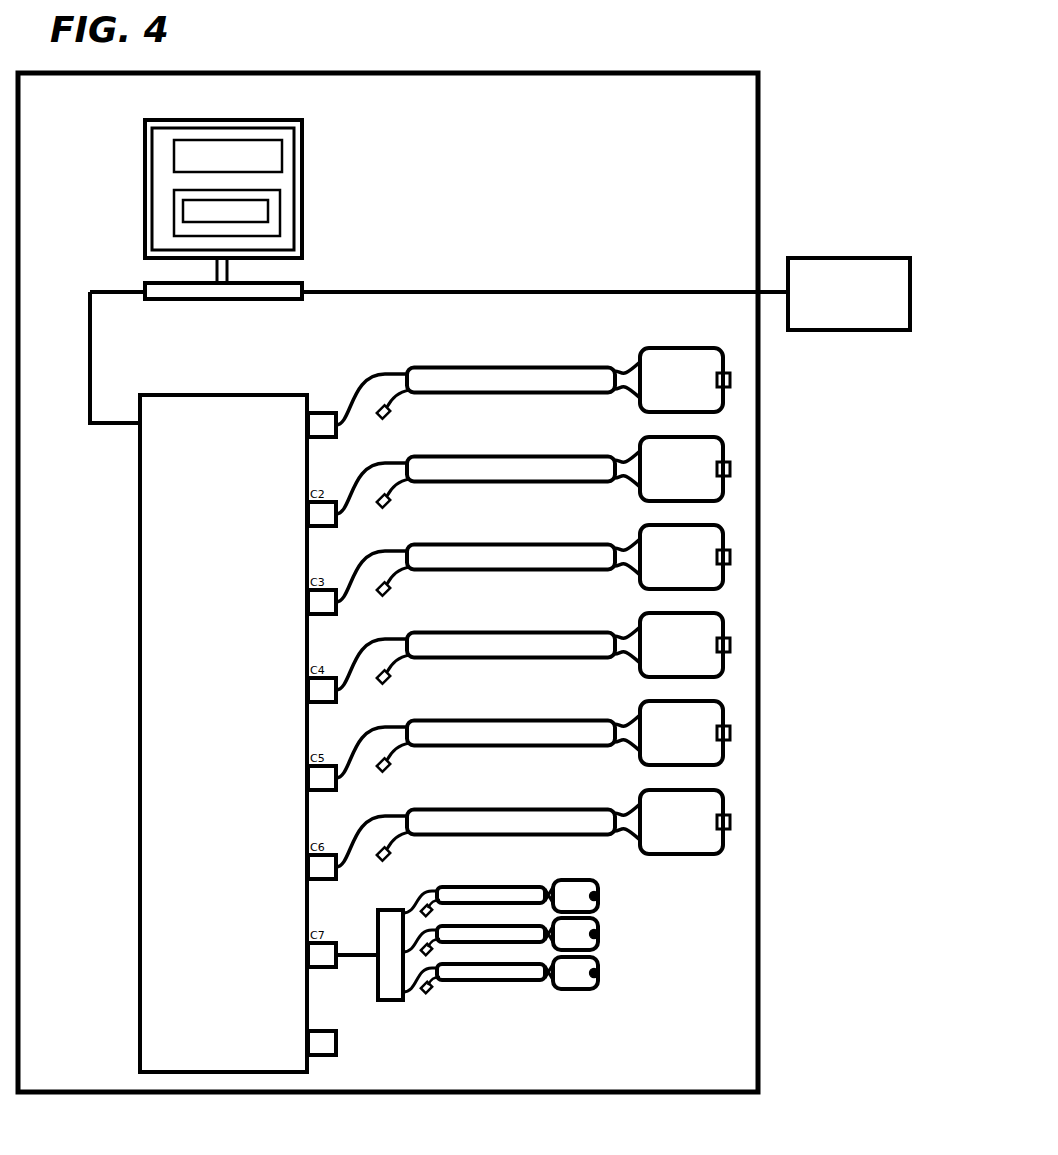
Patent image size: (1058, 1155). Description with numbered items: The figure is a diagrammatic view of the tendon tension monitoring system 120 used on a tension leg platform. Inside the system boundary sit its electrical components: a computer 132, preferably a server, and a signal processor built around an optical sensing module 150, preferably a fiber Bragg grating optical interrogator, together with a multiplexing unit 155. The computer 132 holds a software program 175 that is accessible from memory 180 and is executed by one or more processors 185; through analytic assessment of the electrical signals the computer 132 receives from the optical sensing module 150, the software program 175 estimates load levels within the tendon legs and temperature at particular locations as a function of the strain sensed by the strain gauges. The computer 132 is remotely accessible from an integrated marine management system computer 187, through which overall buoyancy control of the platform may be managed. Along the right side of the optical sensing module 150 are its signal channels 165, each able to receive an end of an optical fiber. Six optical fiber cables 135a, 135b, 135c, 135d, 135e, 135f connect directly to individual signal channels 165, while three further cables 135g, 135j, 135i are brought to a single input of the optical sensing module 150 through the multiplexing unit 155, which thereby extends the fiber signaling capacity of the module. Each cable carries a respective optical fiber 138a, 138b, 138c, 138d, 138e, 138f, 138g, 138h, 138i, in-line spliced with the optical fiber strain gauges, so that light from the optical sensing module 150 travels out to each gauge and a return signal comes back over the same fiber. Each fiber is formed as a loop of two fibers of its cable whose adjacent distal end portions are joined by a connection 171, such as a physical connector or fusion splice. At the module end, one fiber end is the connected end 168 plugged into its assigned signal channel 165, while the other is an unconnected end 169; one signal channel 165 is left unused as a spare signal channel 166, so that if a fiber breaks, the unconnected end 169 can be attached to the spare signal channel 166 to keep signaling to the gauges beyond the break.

The tendon tension monitoring system 120 is at (412, 72).
The computer 132 is at (145, 172).
The processors 185 is at (282, 156).
The software program 175 is at (270, 208).
The memory 180 is at (283, 210).
The integrated marine management system computer 187 is at (837, 270).
The optical sensing module 150 is at (203, 410).
The signal channel 165 is at (325, 410).
The spare signal channel 166 is at (340, 1050).
The connected end 168 is at (340, 420).
The unconnected end 169 is at (390, 408).
The connection 171 is at (731, 380).
The multiplexing unit 155 is at (392, 908).
The optical fiber cable 135a is at (530, 367).
The optical fiber cable 135b is at (578, 457).
The optical fiber cable 135c is at (566, 546).
The optical fiber cable 135d is at (540, 634).
The optical fiber cable 135e is at (525, 722).
The optical fiber cable 135f is at (545, 810).
The optical fiber cable 135g is at (482, 883).
The optical fiber cable 135j is at (487, 920).
The optical fiber cable 135i is at (495, 972).
The optical fiber 138a is at (723, 402).
The optical fiber 138b is at (723, 493).
The optical fiber 138c is at (723, 583).
The optical fiber 138d is at (725, 663).
The optical fiber 138e is at (725, 752).
The optical fiber 138f is at (723, 845).
The optical fiber 138g is at (597, 885).
The optical fiber 138h is at (597, 935).
The optical fiber 138i is at (595, 987).